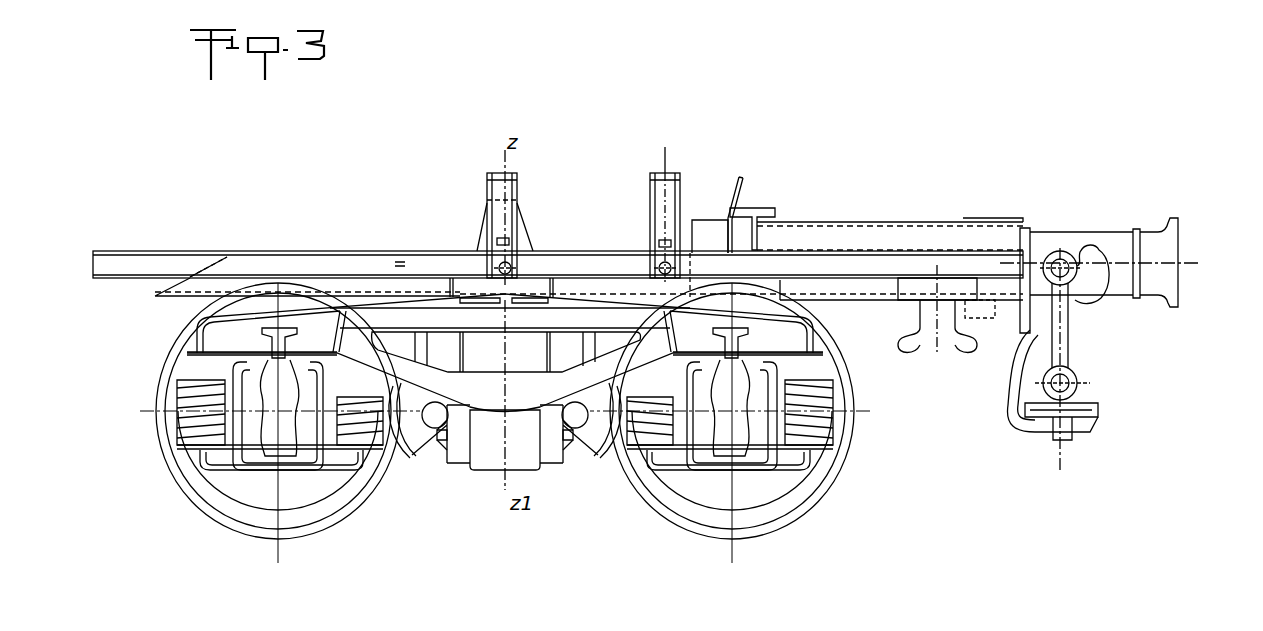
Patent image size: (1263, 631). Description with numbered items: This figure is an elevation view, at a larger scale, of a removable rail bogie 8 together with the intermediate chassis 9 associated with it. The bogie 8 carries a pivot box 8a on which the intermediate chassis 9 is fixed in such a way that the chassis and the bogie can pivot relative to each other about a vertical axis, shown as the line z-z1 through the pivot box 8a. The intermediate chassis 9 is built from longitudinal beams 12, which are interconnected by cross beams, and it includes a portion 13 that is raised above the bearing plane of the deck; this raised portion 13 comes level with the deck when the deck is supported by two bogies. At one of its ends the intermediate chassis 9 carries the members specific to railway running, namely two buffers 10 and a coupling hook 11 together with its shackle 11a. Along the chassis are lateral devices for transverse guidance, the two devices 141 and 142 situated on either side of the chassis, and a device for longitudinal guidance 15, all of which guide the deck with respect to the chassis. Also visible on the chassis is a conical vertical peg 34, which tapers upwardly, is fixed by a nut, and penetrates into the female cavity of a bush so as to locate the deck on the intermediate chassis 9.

The bogie 8 is at (487, 460).
The pivot box 8a is at (530, 300).
The intermediate chassis 9 is at (304, 241).
The buffer 10 is at (1150, 242).
The coupling hook 11 is at (1092, 287).
The shackle 11a is at (1073, 354).
The longitudinal beam 12 is at (250, 262).
The raised portion 13 is at (860, 223).
The lateral device for transverse guidance 141 is at (518, 207).
The lateral device for transverse guidance 142 is at (680, 188).
The device for longitudinal guidance 15 is at (740, 192).
The conical vertical peg 34 is at (481, 241).